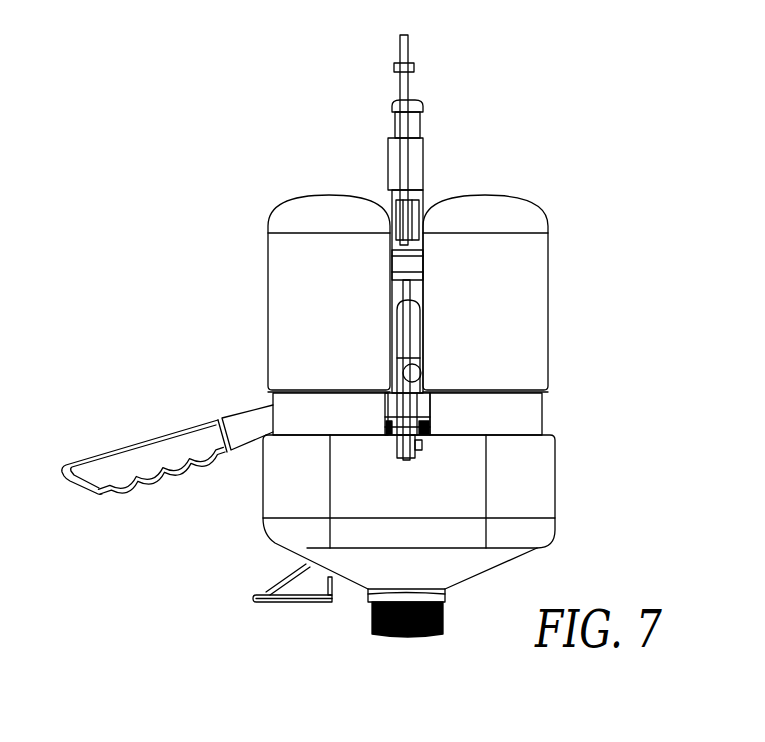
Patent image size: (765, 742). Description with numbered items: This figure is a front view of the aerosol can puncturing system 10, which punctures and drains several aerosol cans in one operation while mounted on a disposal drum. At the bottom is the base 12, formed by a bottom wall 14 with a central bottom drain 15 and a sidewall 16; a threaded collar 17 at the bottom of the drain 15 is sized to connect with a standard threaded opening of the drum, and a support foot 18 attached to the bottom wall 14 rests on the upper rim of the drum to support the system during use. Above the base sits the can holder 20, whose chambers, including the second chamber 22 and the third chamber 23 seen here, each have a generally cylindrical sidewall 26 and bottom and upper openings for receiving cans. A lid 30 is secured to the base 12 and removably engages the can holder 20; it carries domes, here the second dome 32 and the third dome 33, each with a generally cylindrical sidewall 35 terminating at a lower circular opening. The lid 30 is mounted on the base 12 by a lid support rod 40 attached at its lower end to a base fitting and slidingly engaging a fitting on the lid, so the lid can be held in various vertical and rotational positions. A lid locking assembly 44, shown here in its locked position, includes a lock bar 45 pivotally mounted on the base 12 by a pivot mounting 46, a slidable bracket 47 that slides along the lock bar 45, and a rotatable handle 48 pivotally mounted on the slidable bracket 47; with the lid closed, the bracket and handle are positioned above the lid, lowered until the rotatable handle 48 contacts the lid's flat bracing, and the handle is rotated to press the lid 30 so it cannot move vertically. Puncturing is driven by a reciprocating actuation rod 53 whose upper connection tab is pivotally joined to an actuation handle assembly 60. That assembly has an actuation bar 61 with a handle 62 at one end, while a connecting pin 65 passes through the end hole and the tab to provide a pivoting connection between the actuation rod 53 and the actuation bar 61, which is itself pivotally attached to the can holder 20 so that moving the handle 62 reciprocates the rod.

The aerosol can puncturing system 10 is at (262, 173).
The base 12 is at (273, 532).
The bottom wall 14 is at (510, 565).
The central bottom drain 15 is at (448, 598).
The sidewall 16 is at (263, 493).
The threaded collar 17 is at (380, 633).
The support foot 18 is at (265, 602).
The can holder 20 is at (533, 407).
The second chamber 22 is at (330, 408).
The third chamber 23 is at (505, 415).
The cylindrical sidewall 26 is at (268, 403).
The lid 30 is at (545, 232).
The second dome 32 is at (316, 309).
The third dome 33 is at (473, 309).
The cylindrical sidewall 35 is at (268, 248).
The lid support rod 40 is at (420, 118).
The lid locking assembly 44 is at (388, 181).
The lock bar 45 is at (404, 155).
The pivot mounting 46 is at (422, 447).
The slidable bracket 47 is at (412, 265).
The rotatable handle 48 is at (395, 153).
The reciprocating actuation rod 53 is at (420, 407).
The actuation handle assembly 60 is at (184, 423).
The actuation bar 61 is at (252, 441).
The handle 62 is at (103, 470).
The connecting pin 65 is at (420, 375).